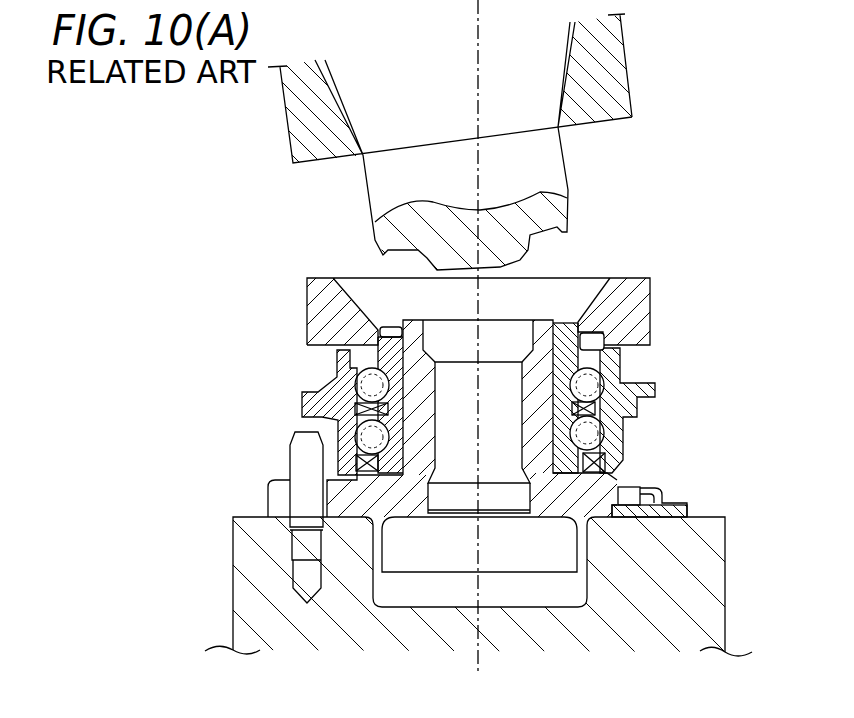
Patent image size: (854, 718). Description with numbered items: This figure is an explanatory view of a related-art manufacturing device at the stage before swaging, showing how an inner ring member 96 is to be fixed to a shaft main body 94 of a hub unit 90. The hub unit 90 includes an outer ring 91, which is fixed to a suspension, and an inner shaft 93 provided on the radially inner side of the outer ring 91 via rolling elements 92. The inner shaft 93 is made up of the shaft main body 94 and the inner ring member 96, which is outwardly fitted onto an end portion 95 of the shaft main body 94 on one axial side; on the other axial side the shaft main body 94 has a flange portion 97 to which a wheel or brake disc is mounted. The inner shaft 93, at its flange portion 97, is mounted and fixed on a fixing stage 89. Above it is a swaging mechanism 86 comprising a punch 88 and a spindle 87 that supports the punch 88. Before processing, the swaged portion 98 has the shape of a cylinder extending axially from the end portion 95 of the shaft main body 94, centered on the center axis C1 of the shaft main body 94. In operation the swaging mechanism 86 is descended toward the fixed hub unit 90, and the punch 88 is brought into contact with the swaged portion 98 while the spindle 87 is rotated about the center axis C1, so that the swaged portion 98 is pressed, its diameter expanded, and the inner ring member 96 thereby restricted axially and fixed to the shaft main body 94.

The swaging mechanism 86 is at (270, 124).
The spindle 87 is at (626, 66).
The punch 88 is at (390, 183).
The fixing stage 89 is at (247, 558).
The hub unit 90 is at (672, 392).
The outer ring 91 is at (328, 394).
The rolling elements 92 is at (370, 383).
The inner shaft 93 is at (546, 532).
The shaft main body 94 is at (545, 438).
The end portion 95 is at (543, 350).
The inner ring member 96 is at (607, 350).
The flange portion 97 is at (268, 496).
The swaged portion 98 is at (545, 333).
The center axis C1 is at (477, 660).